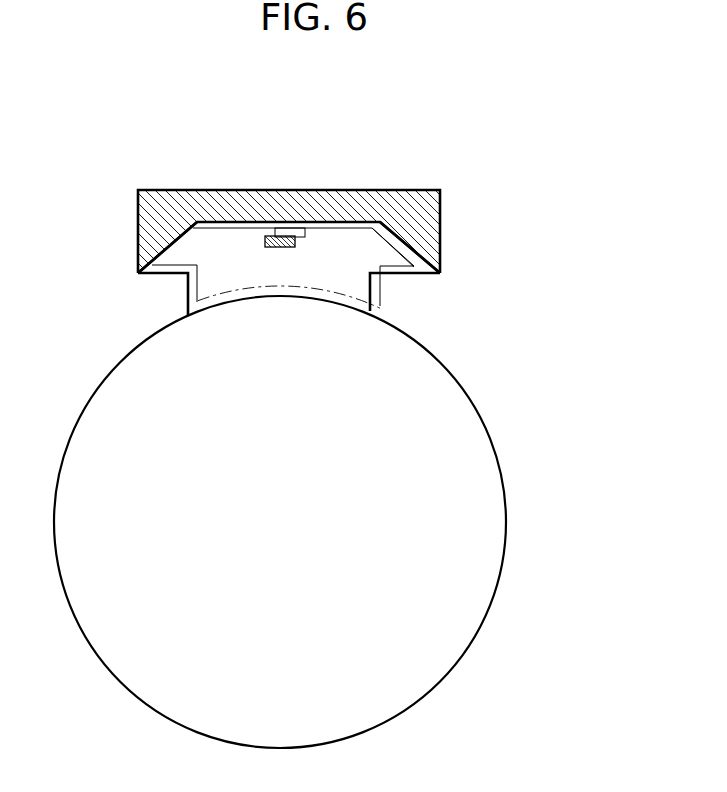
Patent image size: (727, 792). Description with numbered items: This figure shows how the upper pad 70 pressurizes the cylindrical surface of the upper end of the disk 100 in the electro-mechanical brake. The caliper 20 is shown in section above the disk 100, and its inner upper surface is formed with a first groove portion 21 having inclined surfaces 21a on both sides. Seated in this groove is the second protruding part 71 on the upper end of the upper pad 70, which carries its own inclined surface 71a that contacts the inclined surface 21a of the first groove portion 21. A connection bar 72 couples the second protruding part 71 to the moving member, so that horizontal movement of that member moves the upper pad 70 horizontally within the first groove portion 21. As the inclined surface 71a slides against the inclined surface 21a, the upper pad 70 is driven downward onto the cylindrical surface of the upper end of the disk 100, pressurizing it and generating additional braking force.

The caliper 20 is at (283, 184).
The first groove portion 21 is at (350, 221).
The inclined surface 21a is at (180, 236).
The upper pad 70 is at (391, 293).
The second protruding part 71 is at (232, 242).
The inclined surface 71a is at (172, 238).
The connection bar 72 is at (267, 248).
The disk 100 is at (486, 398).